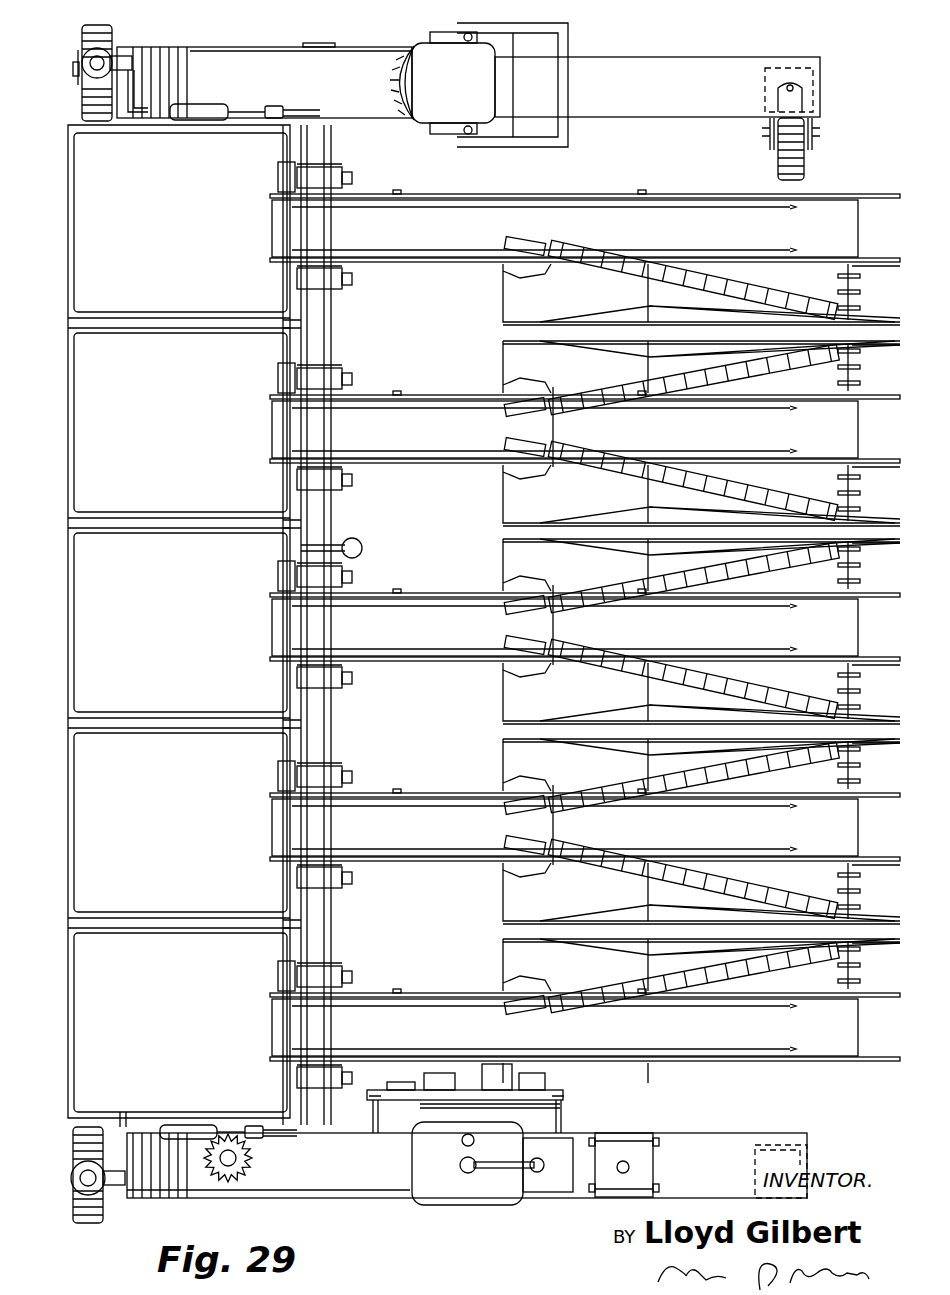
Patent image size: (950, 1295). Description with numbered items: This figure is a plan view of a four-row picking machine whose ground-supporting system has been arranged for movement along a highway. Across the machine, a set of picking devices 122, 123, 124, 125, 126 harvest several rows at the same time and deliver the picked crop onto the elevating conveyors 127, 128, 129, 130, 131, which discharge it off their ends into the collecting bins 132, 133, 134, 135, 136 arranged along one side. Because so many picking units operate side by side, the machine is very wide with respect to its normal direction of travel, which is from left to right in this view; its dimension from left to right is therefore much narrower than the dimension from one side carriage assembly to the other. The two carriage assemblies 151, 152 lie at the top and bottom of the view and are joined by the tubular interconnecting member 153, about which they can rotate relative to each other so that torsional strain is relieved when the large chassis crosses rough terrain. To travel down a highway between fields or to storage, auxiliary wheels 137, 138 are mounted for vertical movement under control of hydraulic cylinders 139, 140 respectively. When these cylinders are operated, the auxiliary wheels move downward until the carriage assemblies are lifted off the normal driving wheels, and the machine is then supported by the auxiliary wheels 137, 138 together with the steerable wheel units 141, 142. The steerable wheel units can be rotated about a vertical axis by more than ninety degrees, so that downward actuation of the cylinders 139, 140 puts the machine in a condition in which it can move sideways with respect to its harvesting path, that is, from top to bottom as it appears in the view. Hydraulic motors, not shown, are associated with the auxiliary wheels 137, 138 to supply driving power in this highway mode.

The picking device 122 is at (717, 269).
The picking device 123 is at (717, 433).
The picking device 124 is at (717, 631).
The picking device 125 is at (717, 831).
The picking device 126 is at (717, 1011).
The elevating conveyor 127 is at (559, 226).
The elevating conveyor 128 is at (559, 427).
The elevating conveyor 129 is at (559, 625).
The elevating conveyor 130 is at (559, 825).
The elevating conveyor 131 is at (559, 1025).
The collecting bin 132 is at (167, 238).
The collecting bin 133 is at (179, 430).
The collecting bin 134 is at (167, 638).
The collecting bin 135 is at (167, 838).
The collecting bin 136 is at (167, 1036).
The auxiliary wheel 137 is at (112, 40).
The auxiliary wheel 138 is at (100, 1215).
The hydraulic cylinder 139 is at (82, 56).
The hydraulic cylinder 140 is at (75, 1190).
The steerable wheel unit 141 is at (812, 138).
The steerable wheel unit 142 is at (808, 1150).
The carriage assembly 151 is at (257, 47).
The carriage assembly 152 is at (352, 1200).
The tubular interconnecting member 153 is at (331, 940).